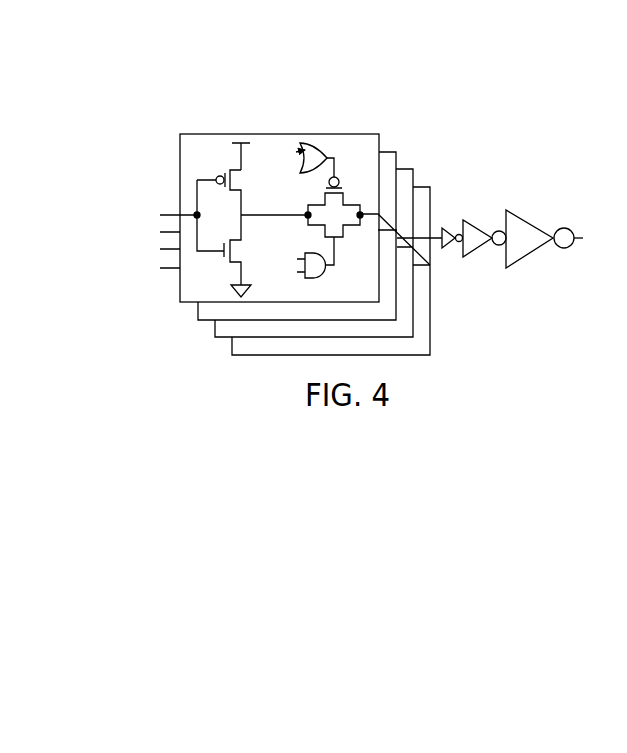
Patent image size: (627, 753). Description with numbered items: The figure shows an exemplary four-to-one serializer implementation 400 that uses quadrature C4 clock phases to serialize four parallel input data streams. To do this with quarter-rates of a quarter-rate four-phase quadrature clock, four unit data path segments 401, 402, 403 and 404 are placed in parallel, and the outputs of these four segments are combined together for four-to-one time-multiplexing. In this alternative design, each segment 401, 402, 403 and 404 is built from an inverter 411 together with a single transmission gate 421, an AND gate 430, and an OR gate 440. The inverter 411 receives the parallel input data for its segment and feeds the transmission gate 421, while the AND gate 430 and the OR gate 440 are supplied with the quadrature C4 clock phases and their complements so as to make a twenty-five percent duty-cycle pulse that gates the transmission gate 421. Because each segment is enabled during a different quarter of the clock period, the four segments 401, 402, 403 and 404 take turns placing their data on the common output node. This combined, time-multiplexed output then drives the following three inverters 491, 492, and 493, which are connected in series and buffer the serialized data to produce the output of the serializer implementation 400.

The 4:1 serializer implementation 400 is at (294, 66).
The segment 401 is at (380, 134).
The segment 402 is at (397, 153).
The segment 403 is at (413, 170).
The segment 404 is at (430, 202).
The inverter 411 is at (227, 106).
The transmission gate 421 is at (350, 168).
The AND gate 430 is at (327, 272).
The OR gate 440 is at (321, 142).
The inverter 491 is at (447, 250).
The inverter 492 is at (480, 253).
The inverter 493 is at (533, 252).